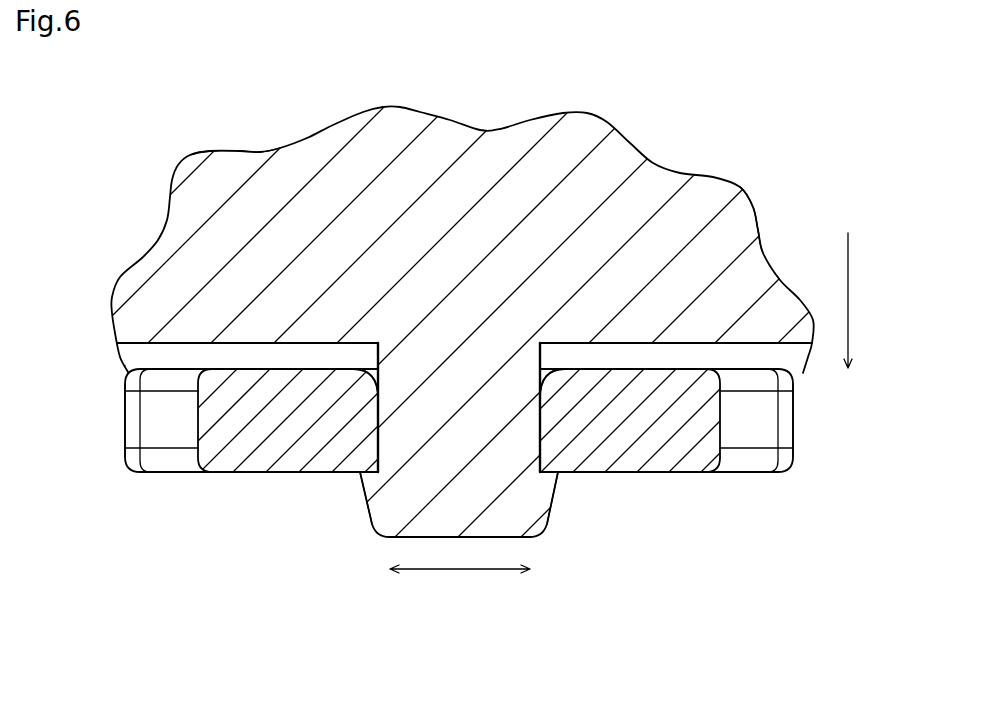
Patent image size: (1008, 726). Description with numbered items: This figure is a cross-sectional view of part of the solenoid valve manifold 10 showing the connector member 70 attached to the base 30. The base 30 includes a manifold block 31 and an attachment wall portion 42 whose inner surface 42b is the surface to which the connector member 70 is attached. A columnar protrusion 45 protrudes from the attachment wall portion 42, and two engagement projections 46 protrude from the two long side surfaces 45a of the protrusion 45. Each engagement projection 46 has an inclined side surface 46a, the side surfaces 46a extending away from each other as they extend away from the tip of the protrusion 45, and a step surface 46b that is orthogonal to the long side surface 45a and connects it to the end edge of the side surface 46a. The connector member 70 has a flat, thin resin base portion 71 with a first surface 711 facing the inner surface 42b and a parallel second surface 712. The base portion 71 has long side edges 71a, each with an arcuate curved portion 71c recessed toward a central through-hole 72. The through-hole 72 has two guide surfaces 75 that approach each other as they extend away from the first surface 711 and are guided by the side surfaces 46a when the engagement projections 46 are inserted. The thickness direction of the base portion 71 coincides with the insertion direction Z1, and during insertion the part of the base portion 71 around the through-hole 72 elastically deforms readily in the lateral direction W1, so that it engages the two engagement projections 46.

The solenoid valve manifold 10 is at (760, 115).
The base 30 is at (169, 146).
The manifold block 31 is at (747, 217).
The attachment wall portion 42 is at (243, 163).
The inner surface 42b is at (118, 352).
The protrusion 45 is at (458, 380).
The long side surfaces 45a is at (273, 410).
The engagement projections 46 is at (368, 502).
The side surfaces 46a is at (360, 478).
The step surface 46b is at (556, 466).
The connector member 70 is at (123, 485).
The base portion 71 is at (177, 462).
The long side edges 71a is at (126, 428).
The curved portion 71c is at (198, 411).
The first surface 711 is at (280, 366).
The second surface 712 is at (257, 473).
The through-hole 72 is at (540, 392).
The guide surfaces 75 is at (378, 393).
The lateral direction W1 is at (460, 569).
The insertion direction Z1 is at (856, 304).